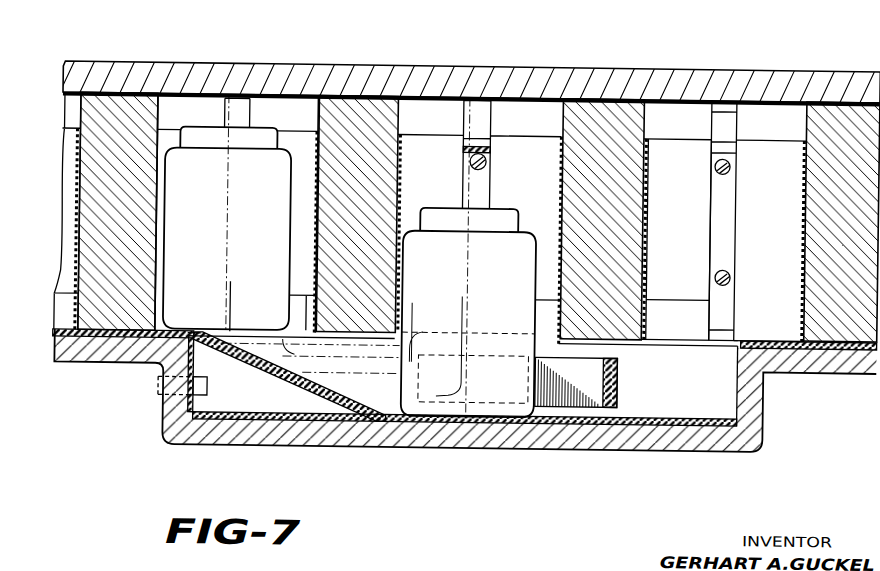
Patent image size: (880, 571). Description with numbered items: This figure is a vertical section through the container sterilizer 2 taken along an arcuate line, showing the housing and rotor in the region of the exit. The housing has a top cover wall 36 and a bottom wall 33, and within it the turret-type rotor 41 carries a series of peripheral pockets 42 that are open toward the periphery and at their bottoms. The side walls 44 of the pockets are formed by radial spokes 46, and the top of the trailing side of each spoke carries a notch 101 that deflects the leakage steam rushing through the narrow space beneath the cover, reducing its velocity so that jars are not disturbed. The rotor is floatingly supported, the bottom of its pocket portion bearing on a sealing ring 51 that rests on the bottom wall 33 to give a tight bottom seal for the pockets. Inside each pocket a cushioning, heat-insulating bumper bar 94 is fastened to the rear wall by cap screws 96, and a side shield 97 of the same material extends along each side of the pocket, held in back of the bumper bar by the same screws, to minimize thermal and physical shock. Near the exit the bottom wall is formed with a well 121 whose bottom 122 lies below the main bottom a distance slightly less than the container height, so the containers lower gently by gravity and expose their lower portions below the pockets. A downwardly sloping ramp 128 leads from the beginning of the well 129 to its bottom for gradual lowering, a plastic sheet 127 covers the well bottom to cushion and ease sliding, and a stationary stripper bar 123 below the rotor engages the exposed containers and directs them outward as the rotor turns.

The container sterilizer 2 is at (183, 60).
The top cover wall 36 is at (494, 66).
The notch 101 is at (113, 92).
The peripheral pockets 42 is at (290, 99).
The rotor 41 is at (365, 93).
The side walls 44 is at (163, 112).
The spokes 46 is at (160, 204).
The side shield 97 is at (300, 194).
The cap screws 96 is at (493, 157).
The bumper bar 94 is at (712, 206).
The bottom of the well 122 is at (337, 444).
The bottom wall 33 is at (79, 363).
The sealing ring 51 is at (122, 357).
The sheet 127 is at (712, 408).
The well 121 is at (660, 412).
The ramp 128 is at (280, 369).
The beginning of the well 129 is at (193, 331).
The stripper bar 123 is at (618, 374).